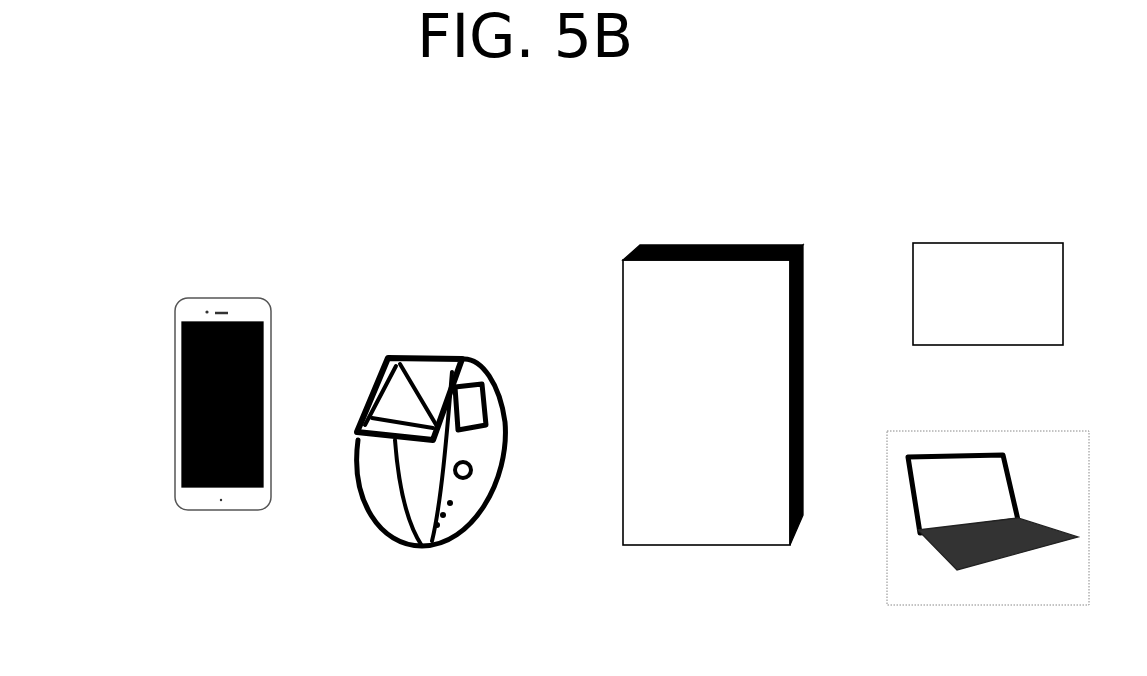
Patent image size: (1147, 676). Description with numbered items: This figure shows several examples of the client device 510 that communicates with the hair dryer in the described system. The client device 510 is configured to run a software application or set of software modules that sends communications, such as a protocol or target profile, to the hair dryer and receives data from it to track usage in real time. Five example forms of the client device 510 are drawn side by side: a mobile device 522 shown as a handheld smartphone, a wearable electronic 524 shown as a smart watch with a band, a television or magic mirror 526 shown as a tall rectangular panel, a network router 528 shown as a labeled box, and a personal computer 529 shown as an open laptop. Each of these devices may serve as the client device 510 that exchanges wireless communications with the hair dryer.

The client device 510 is at (553, 129).
The mobile device 522 is at (236, 359).
The wearable electronic 524 is at (499, 380).
The television or magic mirror 526 is at (803, 244).
The network router 528 is at (1063, 243).
The personal computer 529 is at (1003, 455).